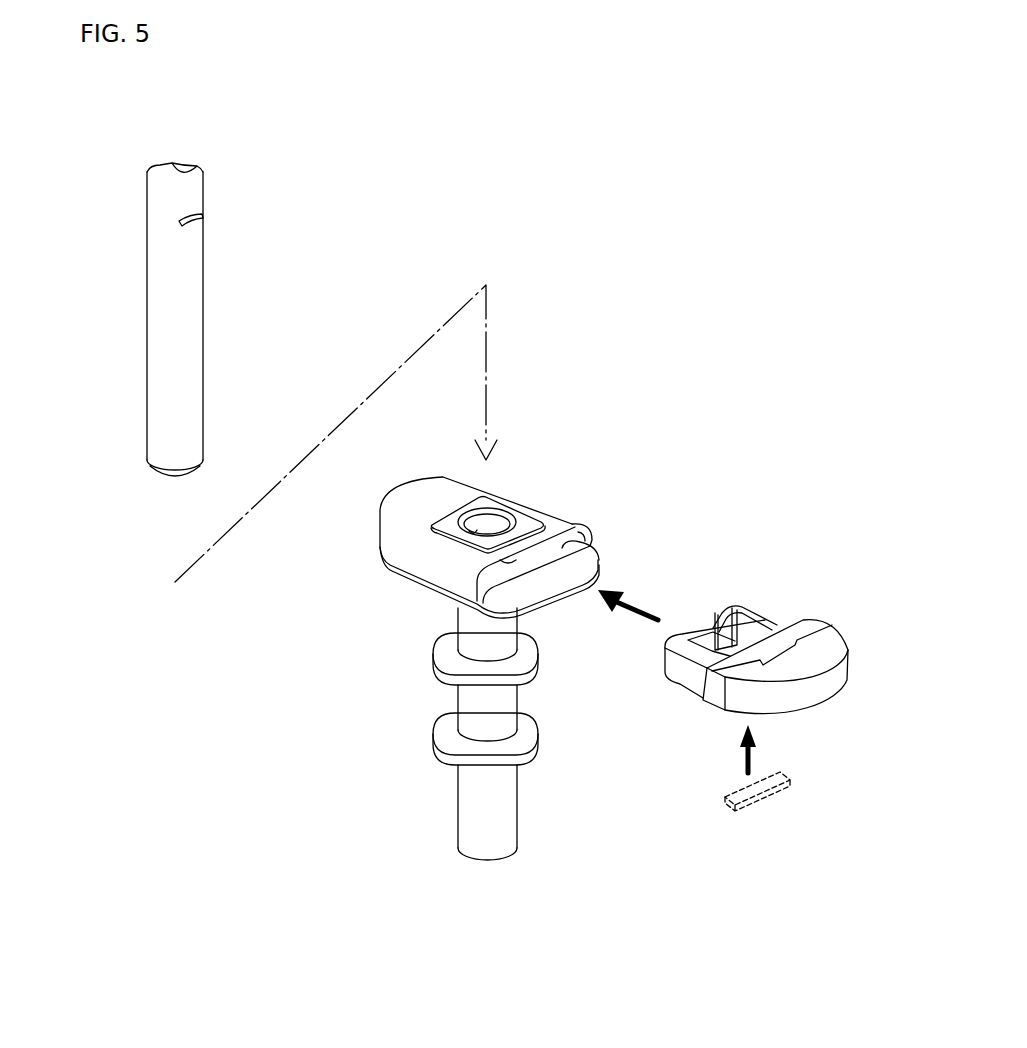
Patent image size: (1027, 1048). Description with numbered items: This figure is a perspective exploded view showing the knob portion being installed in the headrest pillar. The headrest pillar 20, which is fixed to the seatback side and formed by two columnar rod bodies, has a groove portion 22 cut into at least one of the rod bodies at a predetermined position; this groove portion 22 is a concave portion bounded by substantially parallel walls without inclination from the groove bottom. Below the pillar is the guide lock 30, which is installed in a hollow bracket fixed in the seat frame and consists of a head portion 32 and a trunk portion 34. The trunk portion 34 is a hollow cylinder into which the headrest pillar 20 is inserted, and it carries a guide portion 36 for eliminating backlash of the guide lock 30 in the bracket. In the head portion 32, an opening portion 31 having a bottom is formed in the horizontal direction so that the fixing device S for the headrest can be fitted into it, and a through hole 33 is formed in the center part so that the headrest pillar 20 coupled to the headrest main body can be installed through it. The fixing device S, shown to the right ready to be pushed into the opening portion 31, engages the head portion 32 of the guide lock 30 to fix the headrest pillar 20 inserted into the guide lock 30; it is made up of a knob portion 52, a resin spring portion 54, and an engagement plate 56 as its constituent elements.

The headrest pillar 20 is at (143, 379).
The groove portion 22 is at (203, 217).
The guide lock 30 is at (504, 505).
The opening portion 31 is at (592, 553).
The head portion 32 is at (550, 502).
The through hole 33 is at (480, 532).
The trunk portion 34 is at (450, 810).
The guide portion 36 is at (433, 658).
The fixing device S is at (765, 692).
The knob portion 52 is at (852, 622).
The resin spring portion 54 is at (670, 682).
The engagement plate 56 is at (755, 800).